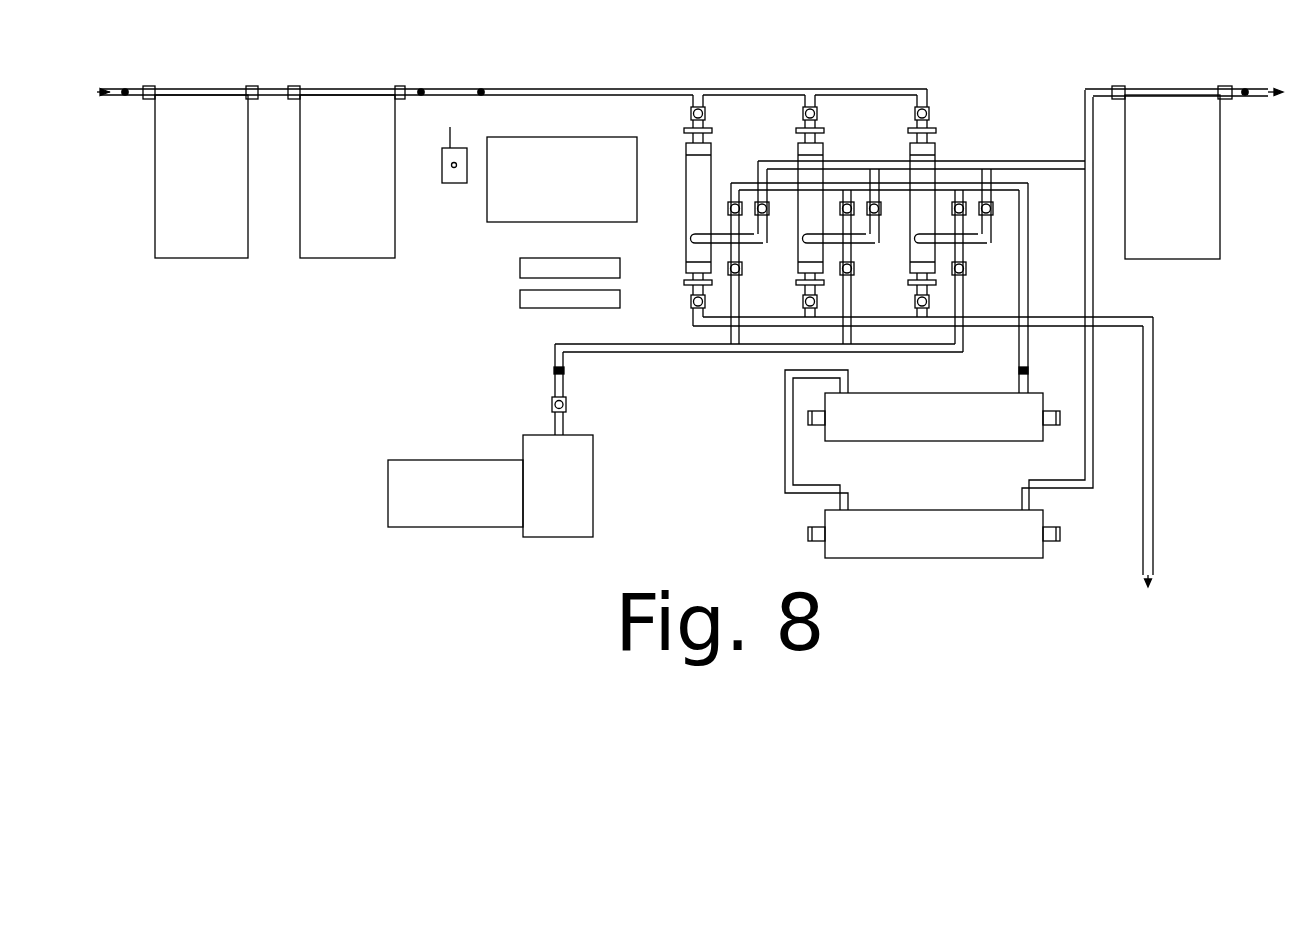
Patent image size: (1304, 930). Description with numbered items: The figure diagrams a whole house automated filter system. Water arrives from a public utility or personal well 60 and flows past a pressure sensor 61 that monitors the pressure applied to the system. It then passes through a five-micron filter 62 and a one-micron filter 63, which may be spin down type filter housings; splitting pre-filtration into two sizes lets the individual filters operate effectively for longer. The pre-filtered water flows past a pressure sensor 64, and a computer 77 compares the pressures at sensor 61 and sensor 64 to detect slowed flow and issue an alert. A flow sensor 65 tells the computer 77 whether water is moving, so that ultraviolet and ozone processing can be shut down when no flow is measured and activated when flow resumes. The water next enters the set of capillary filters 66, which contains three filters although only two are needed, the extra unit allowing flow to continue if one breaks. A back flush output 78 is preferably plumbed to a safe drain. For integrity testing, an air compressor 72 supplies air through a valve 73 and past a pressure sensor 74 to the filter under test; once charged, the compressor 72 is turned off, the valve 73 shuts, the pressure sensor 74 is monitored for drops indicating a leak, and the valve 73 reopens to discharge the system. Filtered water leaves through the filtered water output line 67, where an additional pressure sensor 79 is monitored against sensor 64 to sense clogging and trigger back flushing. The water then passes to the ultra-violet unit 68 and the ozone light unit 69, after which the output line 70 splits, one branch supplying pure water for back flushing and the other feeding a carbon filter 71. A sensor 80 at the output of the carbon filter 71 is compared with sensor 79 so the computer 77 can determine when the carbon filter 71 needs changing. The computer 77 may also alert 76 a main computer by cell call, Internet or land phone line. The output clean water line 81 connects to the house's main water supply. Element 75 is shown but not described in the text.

The public utility or personal well 60 is at (103, 88).
The pressure sensor 61 is at (130, 89).
The 5-micron filter 62 is at (200, 172).
The 1-micron filter 63 is at (346, 172).
The pressure sensor 64 is at (421, 88).
The flow sensor 65 is at (482, 88).
The set of capillary filters 66 is at (952, 135).
The filtered water output line 67 is at (1029, 283).
The ultra-violet unit 68 is at (922, 440).
The ozone light unit 69 is at (934, 534).
The output line 70 is at (1068, 129).
The carbon filter 71 is at (1172, 172).
The air compressor 72 is at (490, 486).
The valve 73 is at (551, 405).
The pressure sensor 74 is at (553, 370).
The heating elements 75 is at (547, 298).
The alert 76 is at (452, 178).
The computer 77 is at (562, 179).
The back flush output 78 is at (1171, 452).
The pressure sensor 79 is at (1029, 372).
The sensor 80 is at (1240, 89).
The output clean water line 81 is at (1270, 87).